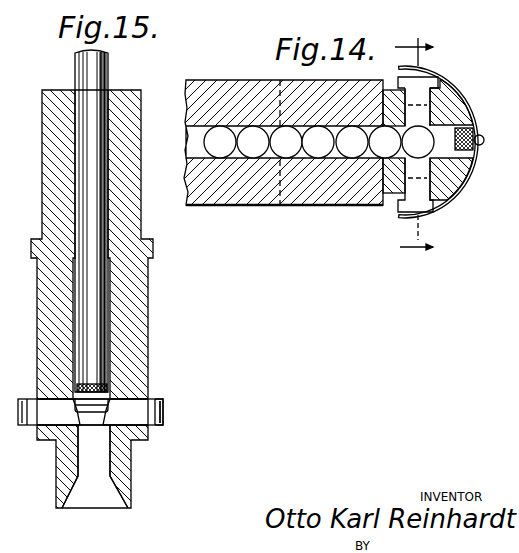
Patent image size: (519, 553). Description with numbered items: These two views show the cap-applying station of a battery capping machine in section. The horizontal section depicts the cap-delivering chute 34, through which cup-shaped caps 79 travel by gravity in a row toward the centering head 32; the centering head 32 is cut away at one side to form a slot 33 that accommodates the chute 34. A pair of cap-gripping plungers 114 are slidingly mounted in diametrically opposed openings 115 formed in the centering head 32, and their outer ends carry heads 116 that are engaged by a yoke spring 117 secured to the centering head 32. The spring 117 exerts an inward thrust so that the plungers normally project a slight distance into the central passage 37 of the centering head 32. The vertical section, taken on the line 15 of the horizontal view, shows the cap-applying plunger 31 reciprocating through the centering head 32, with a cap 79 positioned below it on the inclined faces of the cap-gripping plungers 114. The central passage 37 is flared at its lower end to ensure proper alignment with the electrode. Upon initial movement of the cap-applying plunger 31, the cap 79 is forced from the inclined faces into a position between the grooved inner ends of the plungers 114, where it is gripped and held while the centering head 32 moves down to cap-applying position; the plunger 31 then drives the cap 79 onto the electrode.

In FIG. 14, the section line 15— 15 is at (414, 147).
In FIG. 15, the cap-applying plunger 31 is at (98, 336).
In FIG. 15, the centering head 32 is at (142, 289).
In FIG. 14, the centering head 32 is at (455, 172).
In FIG. 14, the slot 33 is at (398, 192).
In FIG. 14, the cap-delivering chute 34 is at (213, 88).
In FIG. 15, the central passage 37 is at (98, 463).
In FIG. 14, the central passage 37 is at (422, 140).
In FIG. 15, the cup-shaped caps 79 is at (92, 408).
In FIG. 14, the cup-shaped caps 79 is at (318, 152).
In FIG. 15, the cap-gripping plungers 114 is at (50, 415).
In FIG. 15, the diametrically opposed openings 115 is at (46, 398).
In FIG. 15, the heads 116 is at (167, 412).
In FIG. 14, the heads 116 is at (423, 80).
In FIG. 14, the yoke spring 117 is at (470, 105).